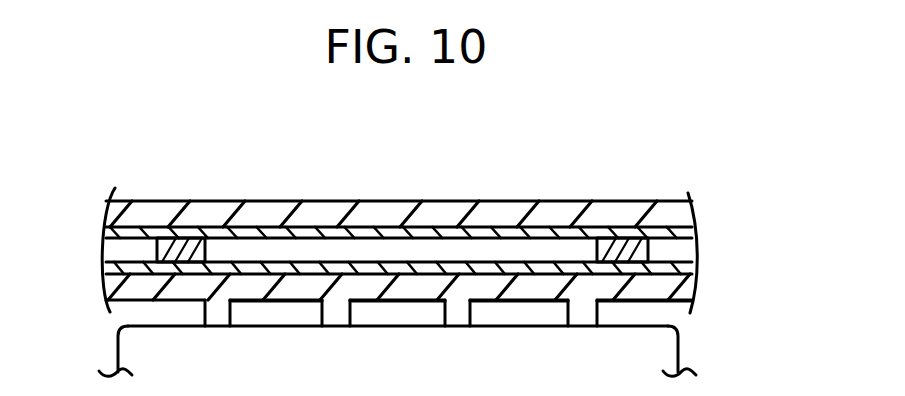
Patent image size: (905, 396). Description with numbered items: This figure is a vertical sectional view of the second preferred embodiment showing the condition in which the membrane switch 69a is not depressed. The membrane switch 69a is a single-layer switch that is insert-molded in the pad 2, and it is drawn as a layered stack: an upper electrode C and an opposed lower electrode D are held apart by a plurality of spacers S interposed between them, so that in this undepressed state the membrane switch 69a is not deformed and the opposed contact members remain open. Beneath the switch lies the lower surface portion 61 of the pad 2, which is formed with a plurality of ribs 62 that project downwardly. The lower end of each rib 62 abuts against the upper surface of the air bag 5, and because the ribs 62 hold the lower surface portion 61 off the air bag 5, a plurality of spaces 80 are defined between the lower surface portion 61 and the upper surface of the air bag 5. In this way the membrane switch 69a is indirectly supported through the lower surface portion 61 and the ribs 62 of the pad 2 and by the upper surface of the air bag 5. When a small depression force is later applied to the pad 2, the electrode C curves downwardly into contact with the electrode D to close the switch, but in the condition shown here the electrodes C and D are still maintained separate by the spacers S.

The pad 2 is at (158, 210).
The electrode C is at (505, 236).
The membrane switch 69a is at (684, 251).
The spacer S is at (155, 243).
The electrode D is at (545, 273).
The lower surface portion 61 is at (688, 296).
The rib 62 is at (219, 313).
The space 80 is at (512, 313).
The air bag 5 is at (350, 369).